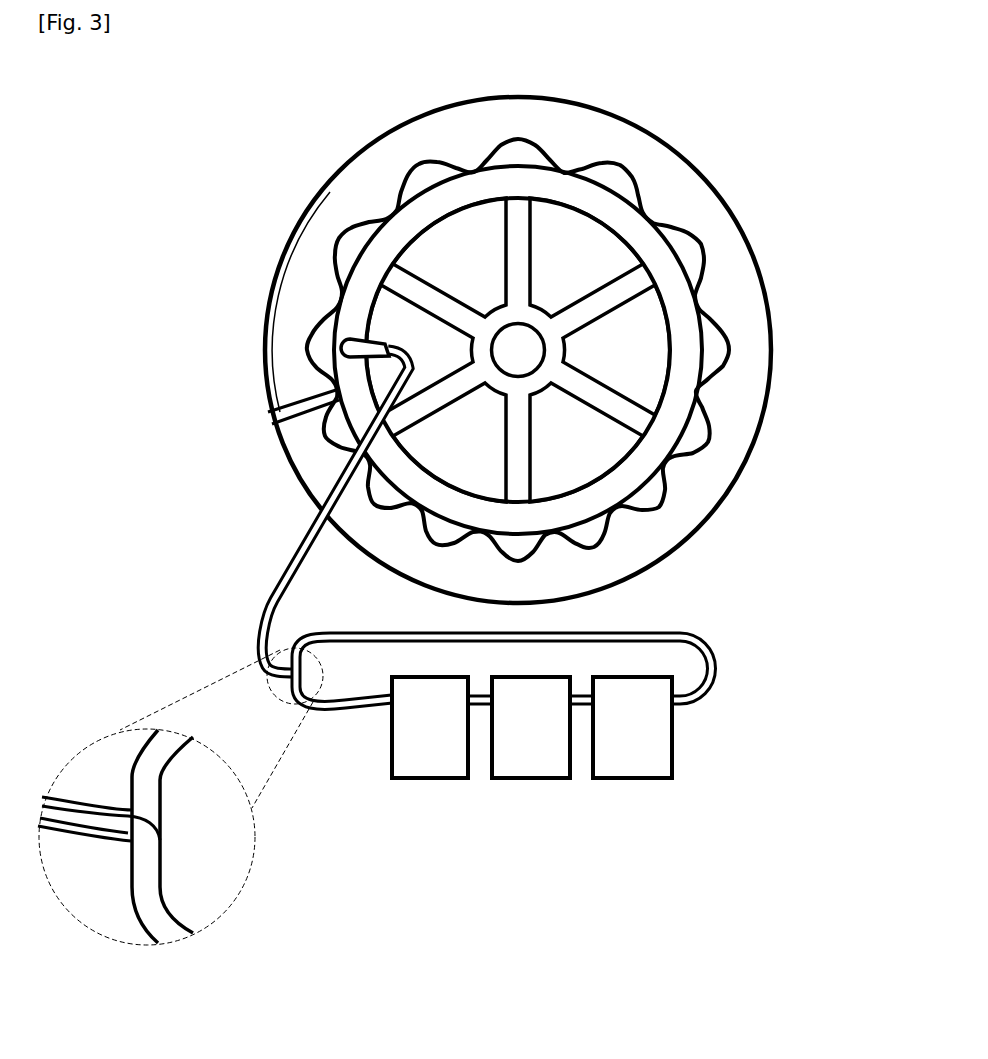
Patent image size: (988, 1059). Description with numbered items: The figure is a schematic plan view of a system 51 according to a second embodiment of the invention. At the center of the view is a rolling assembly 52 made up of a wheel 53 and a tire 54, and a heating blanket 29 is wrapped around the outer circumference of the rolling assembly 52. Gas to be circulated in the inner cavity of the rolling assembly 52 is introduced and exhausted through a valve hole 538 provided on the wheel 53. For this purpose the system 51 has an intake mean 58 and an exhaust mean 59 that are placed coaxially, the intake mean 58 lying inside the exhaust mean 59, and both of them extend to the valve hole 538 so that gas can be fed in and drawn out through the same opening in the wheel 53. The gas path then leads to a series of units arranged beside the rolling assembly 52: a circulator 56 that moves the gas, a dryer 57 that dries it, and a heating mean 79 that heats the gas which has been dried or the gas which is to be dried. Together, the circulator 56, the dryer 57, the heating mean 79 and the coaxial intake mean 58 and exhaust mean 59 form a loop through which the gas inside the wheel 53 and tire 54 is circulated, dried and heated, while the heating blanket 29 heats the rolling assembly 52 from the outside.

The heating blanket 29 is at (305, 278).
The system 51 is at (190, 437).
The rolling assembly 52 is at (233, 339).
The wheel 53 is at (642, 243).
The tire 54 is at (628, 192).
The valve hole 538 is at (378, 345).
The intake mean 58 is at (170, 928).
The exhaust mean 59 is at (143, 795).
The heating mean 79 is at (432, 743).
The dryer 57 is at (533, 743).
The circulator 56 is at (645, 743).